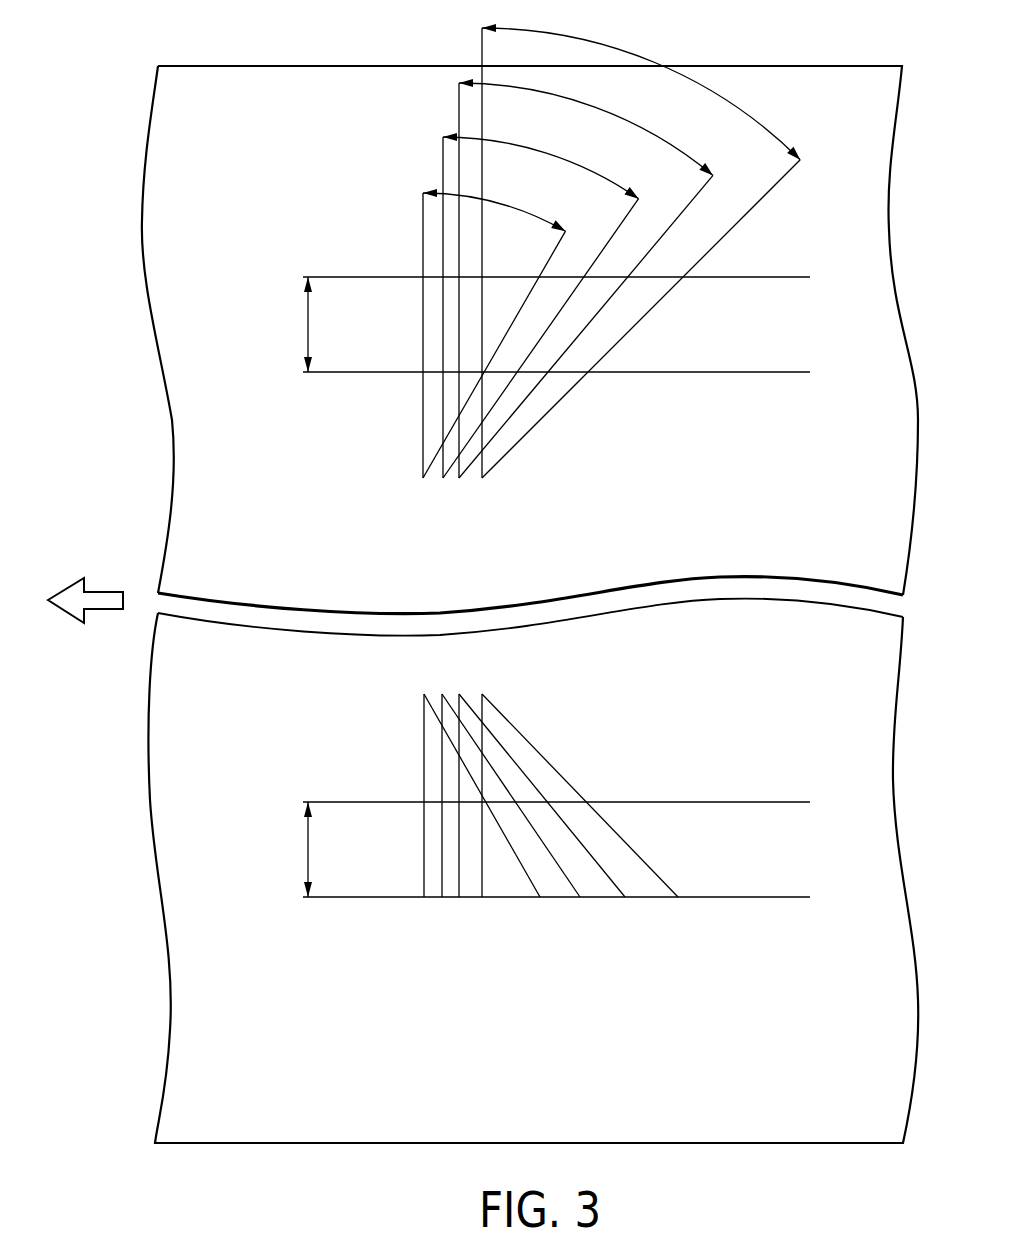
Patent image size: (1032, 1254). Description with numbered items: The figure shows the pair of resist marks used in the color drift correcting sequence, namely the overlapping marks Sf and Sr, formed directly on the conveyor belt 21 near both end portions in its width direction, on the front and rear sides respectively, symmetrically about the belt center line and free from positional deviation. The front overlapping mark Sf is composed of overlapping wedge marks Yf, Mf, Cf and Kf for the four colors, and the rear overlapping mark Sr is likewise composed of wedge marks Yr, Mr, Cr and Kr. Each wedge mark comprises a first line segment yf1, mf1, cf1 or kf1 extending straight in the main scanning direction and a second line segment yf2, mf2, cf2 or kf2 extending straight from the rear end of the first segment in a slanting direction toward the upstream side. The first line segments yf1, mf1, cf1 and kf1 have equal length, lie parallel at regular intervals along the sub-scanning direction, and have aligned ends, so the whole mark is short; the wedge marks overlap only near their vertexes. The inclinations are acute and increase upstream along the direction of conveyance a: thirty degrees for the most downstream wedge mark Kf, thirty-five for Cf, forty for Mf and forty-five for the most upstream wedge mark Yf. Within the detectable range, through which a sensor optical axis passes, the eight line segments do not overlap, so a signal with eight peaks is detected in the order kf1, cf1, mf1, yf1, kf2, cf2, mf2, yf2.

The conveyor belt 21 is at (834, 90).
The direction of conveyance a is at (107, 592).
The overlapping mark Sr is at (533, 283).
The overlapping mark Sf is at (533, 809).
The wedge mark Kr is at (423, 479).
The wedge mark Cr is at (443, 479).
The wedge mark Mr is at (459, 479).
The wedge mark Yr is at (482, 479).
The wedge mark Kf is at (459, 806).
The wedge mark Cf is at (513, 797).
The wedge mark Mf is at (500, 789).
The wedge mark Yf is at (560, 819).
The first line segment kf1 is at (424, 745).
The second line segment kf2 is at (531, 878).
The first line segment cf1 is at (442, 785).
The second line segment cf2 is at (572, 883).
The first line segment mf1 is at (456, 858).
The second line segment mf2 is at (537, 787).
The first line segment yf1 is at (480, 885).
The second line segment yf2 is at (660, 727).